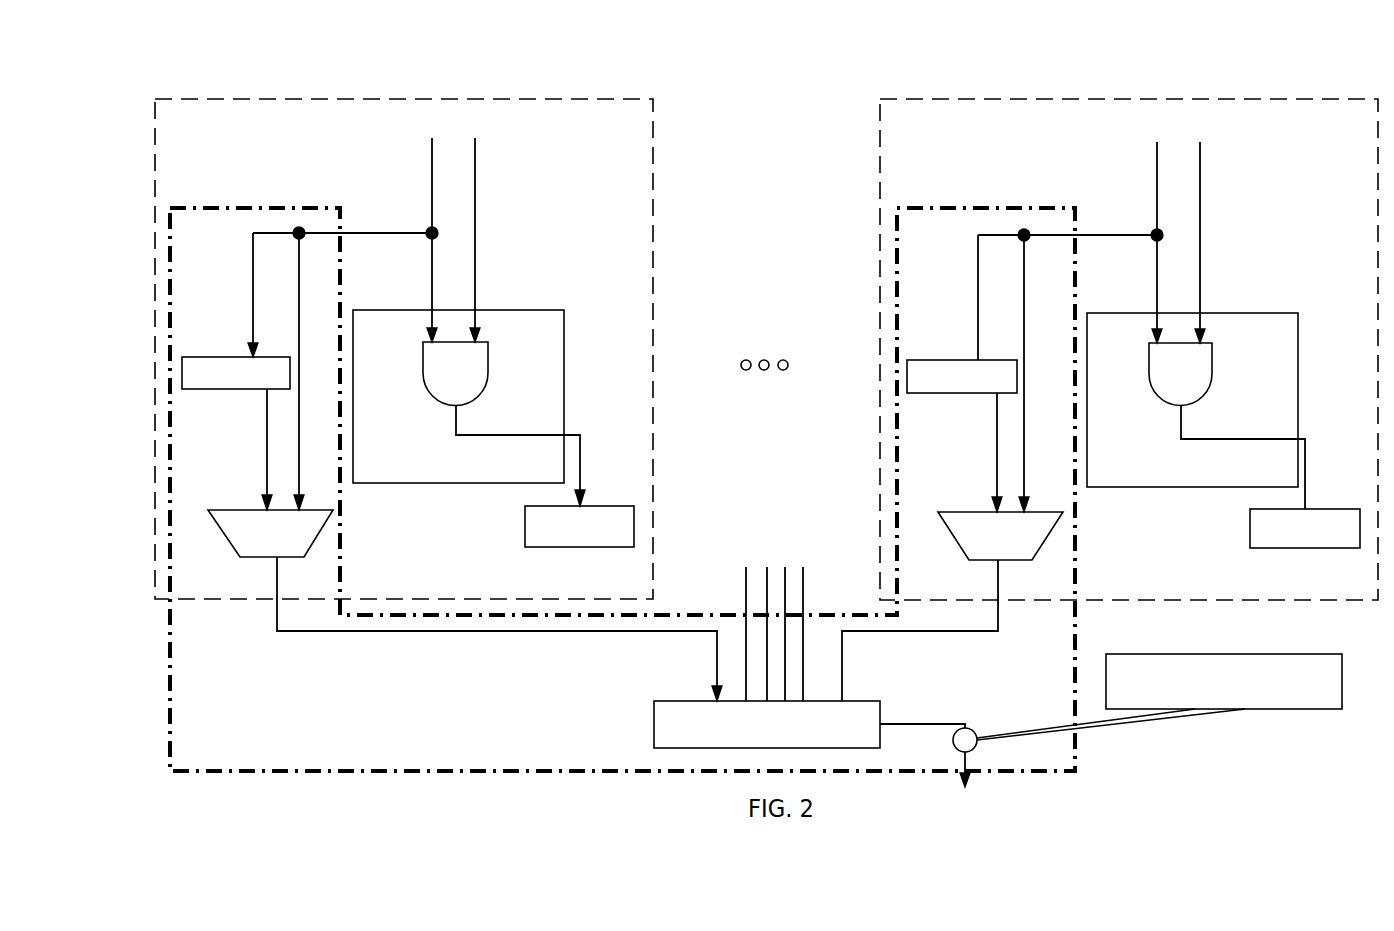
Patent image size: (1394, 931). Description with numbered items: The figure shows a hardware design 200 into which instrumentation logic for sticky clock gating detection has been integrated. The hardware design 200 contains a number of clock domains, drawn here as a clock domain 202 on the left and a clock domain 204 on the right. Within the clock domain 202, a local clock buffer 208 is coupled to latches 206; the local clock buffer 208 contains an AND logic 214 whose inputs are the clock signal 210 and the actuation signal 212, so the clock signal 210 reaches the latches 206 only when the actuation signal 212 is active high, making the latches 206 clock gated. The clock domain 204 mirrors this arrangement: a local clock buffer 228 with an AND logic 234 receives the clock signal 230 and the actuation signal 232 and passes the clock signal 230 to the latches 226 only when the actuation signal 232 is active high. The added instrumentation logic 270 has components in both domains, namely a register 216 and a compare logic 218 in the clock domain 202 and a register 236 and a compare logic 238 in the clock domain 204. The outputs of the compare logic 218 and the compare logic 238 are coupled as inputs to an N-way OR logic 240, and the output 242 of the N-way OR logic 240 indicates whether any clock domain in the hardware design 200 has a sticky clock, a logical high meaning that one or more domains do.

The hardware design 200 is at (288, 48).
The clock domain 202 is at (601, 99).
The clock domain 204 is at (1018, 99).
The latches 206 is at (608, 505).
The local clock buffer 208 is at (450, 484).
The clock signal 210 is at (478, 212).
The actuation signal 212 is at (430, 183).
The AND logic 214 is at (492, 364).
The register 216 is at (206, 356).
The compare logic 218 is at (232, 508).
The latches 226 is at (1333, 508).
The local clock buffer 228 is at (1200, 488).
The clock signal 230 is at (1203, 212).
The actuation signal 232 is at (1155, 184).
The AND logic 234 is at (1215, 365).
The register 236 is at (928, 359).
The compare logic 238 is at (966, 510).
The N-way OR logic 240 is at (654, 724).
The output 242 is at (975, 728).
The instrumentation logic 270 is at (690, 612).